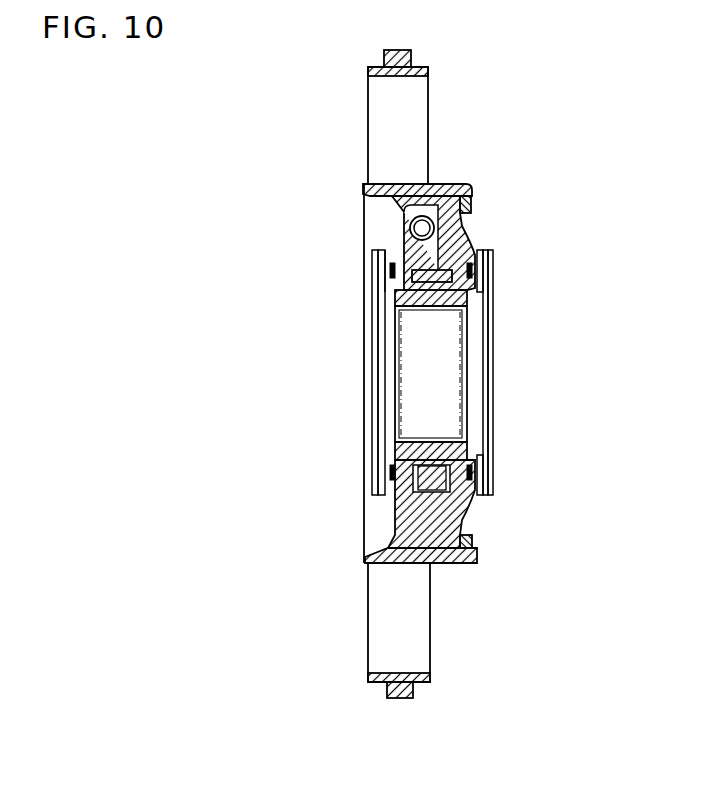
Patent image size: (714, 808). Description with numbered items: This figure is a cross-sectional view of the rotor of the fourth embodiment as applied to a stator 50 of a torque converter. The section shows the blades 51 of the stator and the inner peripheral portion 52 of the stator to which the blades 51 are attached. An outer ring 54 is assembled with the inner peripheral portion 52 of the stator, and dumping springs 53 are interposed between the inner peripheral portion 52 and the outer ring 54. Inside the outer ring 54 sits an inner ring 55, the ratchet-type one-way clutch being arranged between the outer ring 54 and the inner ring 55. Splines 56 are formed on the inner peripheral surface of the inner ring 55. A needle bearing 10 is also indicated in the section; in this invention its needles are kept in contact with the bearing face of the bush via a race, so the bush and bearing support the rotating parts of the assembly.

The needle bearing 10 is at (494, 273).
The stator 50 is at (484, 72).
The blades 51 is at (416, 124).
The inner peripheral portion 52 is at (366, 186).
The dumping springs 53 is at (466, 215).
The outer ring 54 is at (474, 239).
The inner ring 55 is at (466, 302).
The splines 56 is at (428, 308).